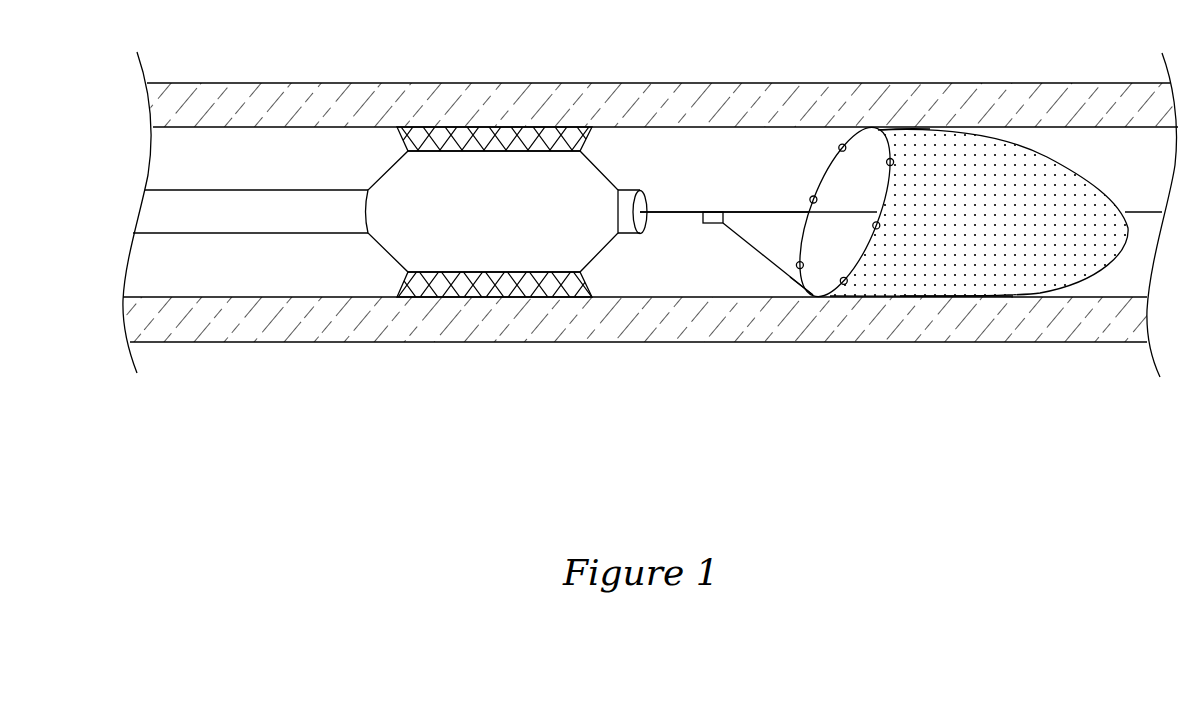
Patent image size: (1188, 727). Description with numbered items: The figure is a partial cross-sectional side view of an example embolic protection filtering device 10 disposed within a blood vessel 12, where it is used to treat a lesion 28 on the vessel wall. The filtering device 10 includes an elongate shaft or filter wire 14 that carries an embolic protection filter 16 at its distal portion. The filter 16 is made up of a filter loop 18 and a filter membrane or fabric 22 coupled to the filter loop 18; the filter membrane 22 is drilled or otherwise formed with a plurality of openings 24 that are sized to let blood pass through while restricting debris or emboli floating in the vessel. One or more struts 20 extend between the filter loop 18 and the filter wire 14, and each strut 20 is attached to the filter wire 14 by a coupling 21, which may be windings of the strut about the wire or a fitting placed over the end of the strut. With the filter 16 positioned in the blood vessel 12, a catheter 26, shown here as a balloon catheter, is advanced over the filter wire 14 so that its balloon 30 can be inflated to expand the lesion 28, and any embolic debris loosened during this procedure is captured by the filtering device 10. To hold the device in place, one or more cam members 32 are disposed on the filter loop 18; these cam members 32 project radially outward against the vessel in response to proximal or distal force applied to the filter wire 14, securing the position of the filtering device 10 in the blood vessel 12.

The embolic protection filtering device 10 is at (635, 158).
The blood vessel 12 is at (703, 102).
The filter wire 14 is at (673, 213).
The embolic protection filter 16 is at (827, 165).
The filter loop 18 is at (905, 128).
The strut 20 is at (767, 258).
The coupling 21 is at (712, 223).
The filter membrane 22 is at (992, 147).
The openings 24 is at (1036, 258).
The catheter 26 is at (312, 186).
The lesion 28 is at (497, 137).
The balloon 30 is at (400, 177).
The cam member 32 is at (843, 277).